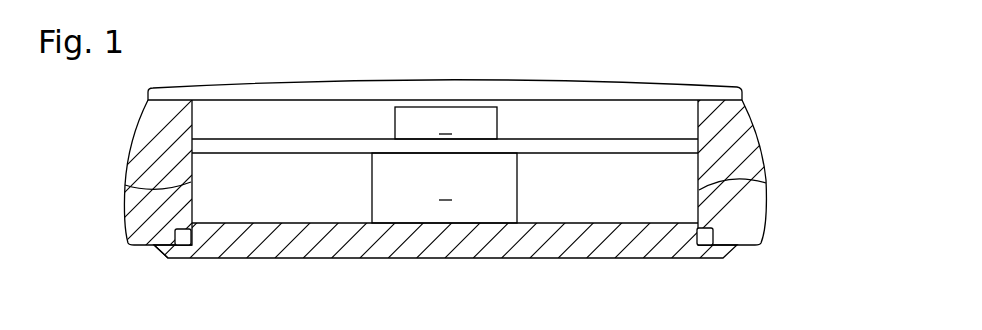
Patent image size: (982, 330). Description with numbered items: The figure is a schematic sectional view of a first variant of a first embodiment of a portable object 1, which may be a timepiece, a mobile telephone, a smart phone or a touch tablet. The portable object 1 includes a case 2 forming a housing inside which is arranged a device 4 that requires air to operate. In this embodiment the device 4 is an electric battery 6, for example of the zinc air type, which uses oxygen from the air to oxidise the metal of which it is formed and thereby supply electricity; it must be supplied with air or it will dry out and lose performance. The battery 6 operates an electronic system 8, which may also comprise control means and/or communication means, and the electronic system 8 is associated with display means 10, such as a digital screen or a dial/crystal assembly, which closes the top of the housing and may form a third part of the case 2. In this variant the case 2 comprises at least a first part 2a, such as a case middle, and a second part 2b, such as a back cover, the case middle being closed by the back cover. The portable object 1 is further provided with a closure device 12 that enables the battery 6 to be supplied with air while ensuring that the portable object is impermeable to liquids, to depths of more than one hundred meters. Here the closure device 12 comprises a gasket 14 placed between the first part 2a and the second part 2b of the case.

The portable object 1 is at (834, 112).
The case 2 is at (770, 220).
The first part 2a is at (738, 133).
The second part 2b is at (658, 259).
The device 4 is at (368, 214).
The electric battery 6 is at (444, 188).
The electronic system 8 is at (446, 123).
The display means 10 is at (686, 86).
The closure device 12 is at (155, 247).
The gasket 14 is at (182, 245).